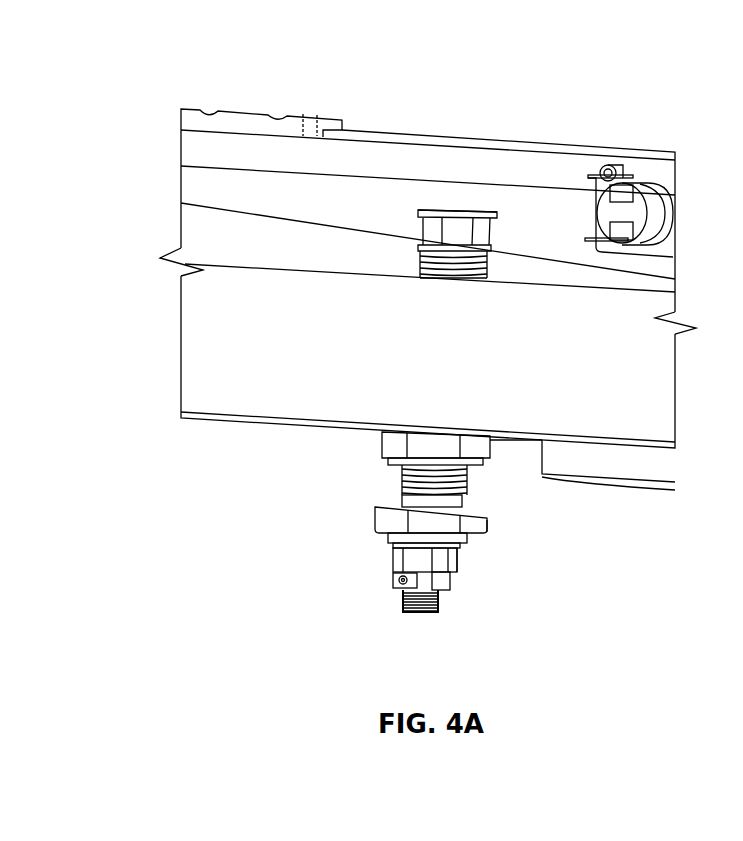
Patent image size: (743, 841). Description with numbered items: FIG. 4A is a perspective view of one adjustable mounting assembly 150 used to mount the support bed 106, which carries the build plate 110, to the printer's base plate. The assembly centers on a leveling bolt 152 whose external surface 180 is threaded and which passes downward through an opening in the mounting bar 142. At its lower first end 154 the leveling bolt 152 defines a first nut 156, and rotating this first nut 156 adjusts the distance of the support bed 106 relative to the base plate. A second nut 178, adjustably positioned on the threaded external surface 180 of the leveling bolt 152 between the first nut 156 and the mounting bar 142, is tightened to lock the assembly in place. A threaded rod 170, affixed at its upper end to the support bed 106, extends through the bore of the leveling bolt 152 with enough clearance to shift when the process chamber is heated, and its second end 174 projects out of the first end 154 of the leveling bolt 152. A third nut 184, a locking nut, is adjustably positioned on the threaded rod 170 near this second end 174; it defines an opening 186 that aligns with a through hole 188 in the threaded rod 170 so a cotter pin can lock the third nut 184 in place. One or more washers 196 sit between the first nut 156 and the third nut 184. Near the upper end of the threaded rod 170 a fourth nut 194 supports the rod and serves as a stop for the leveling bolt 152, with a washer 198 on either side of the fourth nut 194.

The support bed 106 is at (181, 148).
The build plate 110 is at (390, 133).
The mounting bar 142 is at (197, 338).
The adjustable mounting assembly 150 is at (300, 548).
The leveling bolt 152 is at (470, 484).
The first end 154 is at (490, 527).
The first nut 156 is at (380, 517).
The threaded rod 170 is at (420, 612).
The second end 174 is at (403, 603).
The second nut 178 is at (492, 450).
The external surface 180 is at (400, 471).
The third nut 184 is at (395, 553).
The opening 186 is at (457, 587).
The through hole 188 is at (395, 582).
The fourth nut 194 is at (423, 228).
The washers 196 is at (472, 546).
The washer 198 is at (460, 212).